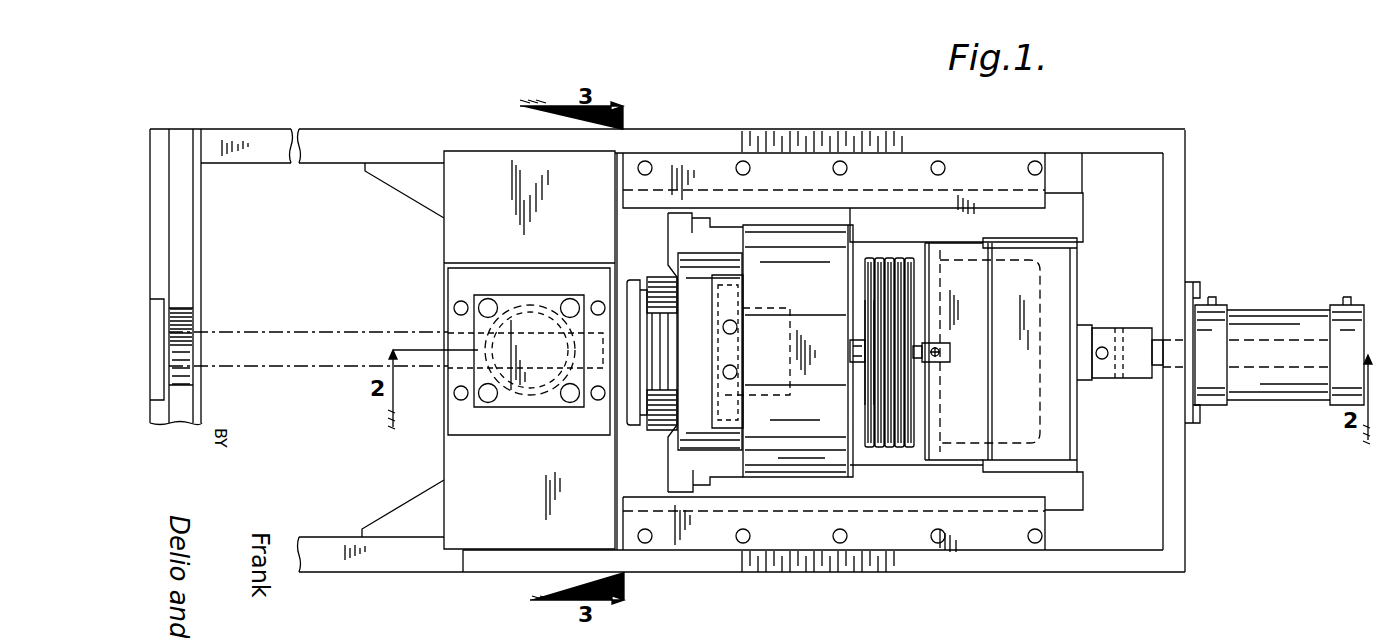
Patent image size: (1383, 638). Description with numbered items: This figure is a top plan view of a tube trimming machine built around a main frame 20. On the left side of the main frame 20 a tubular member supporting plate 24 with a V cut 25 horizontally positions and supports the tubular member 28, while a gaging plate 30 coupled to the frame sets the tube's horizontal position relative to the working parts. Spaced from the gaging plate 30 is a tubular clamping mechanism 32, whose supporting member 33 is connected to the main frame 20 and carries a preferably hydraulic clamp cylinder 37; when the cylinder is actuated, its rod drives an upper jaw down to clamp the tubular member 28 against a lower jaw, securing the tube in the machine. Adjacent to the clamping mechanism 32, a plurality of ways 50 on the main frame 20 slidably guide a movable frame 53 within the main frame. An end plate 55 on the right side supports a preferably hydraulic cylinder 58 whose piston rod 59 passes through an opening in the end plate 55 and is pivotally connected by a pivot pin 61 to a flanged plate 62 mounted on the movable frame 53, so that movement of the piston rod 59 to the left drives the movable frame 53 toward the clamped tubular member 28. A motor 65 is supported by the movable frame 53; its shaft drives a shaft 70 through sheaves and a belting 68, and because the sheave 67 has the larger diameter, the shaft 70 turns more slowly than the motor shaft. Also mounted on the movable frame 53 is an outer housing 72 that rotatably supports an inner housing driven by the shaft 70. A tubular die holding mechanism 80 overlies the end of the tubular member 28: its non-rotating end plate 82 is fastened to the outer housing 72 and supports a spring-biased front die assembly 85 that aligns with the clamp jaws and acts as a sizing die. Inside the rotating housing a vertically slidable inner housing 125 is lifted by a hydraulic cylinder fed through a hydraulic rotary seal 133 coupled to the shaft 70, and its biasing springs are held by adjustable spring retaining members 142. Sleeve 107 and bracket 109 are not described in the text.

The main frame 20 is at (840, 140).
The tubular member supporting plate 24 is at (182, 276).
The V cut 25 is at (180, 320).
The tubular member 28 is at (338, 332).
The gaging plate 30 is at (155, 390).
The tubular clamping mechanism 32 is at (509, 414).
The supporting member 33 is at (465, 238).
The clamp cylinder 37 is at (560, 292).
The ways 50 is at (968, 178).
The movable frame 53 is at (925, 236).
The end plate 55 is at (1174, 256).
The cylinder 58 is at (1272, 322).
The piston rod 59 is at (1166, 362).
The pivot pin 61 is at (1103, 347).
The flanged plate 62 is at (1055, 440).
The motor 65 is at (1040, 298).
The sheave 67 is at (910, 420).
The belting 68 is at (902, 448).
The shaft 70 is at (858, 362).
The outer housing 72 is at (786, 455).
The tubular die holding mechanism 80 is at (616, 414).
The non-rotating end plate 82 is at (688, 425).
The front die assembly 85 is at (640, 343).
The coupling sleeve 107 is at (682, 353).
The bracket 109 is at (668, 273).
The vertically slidable inner housing 125 is at (760, 308).
The hydraulic rotary seal 133 is at (965, 342).
The spring retaining members 142 is at (737, 372).